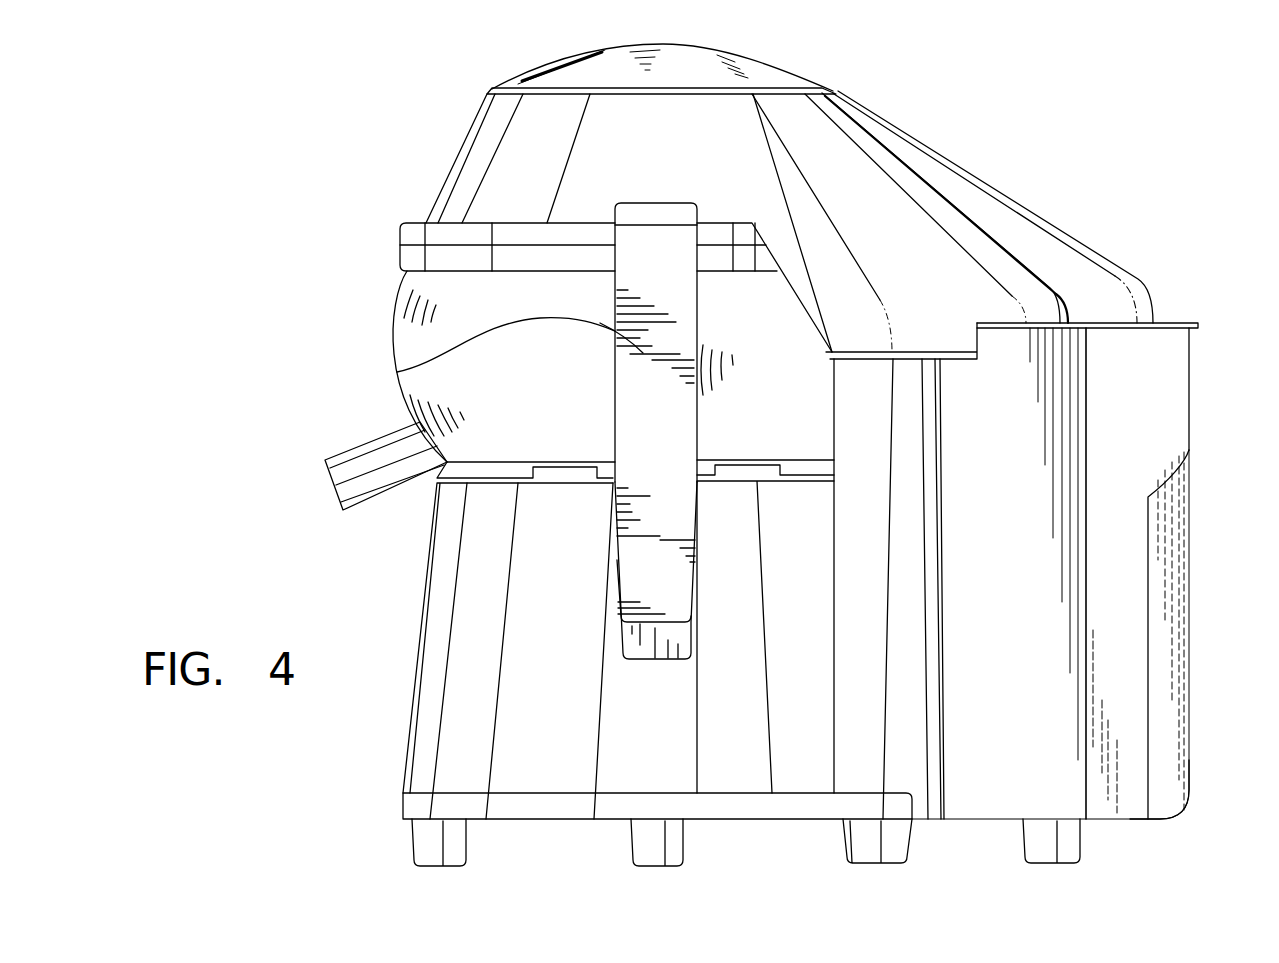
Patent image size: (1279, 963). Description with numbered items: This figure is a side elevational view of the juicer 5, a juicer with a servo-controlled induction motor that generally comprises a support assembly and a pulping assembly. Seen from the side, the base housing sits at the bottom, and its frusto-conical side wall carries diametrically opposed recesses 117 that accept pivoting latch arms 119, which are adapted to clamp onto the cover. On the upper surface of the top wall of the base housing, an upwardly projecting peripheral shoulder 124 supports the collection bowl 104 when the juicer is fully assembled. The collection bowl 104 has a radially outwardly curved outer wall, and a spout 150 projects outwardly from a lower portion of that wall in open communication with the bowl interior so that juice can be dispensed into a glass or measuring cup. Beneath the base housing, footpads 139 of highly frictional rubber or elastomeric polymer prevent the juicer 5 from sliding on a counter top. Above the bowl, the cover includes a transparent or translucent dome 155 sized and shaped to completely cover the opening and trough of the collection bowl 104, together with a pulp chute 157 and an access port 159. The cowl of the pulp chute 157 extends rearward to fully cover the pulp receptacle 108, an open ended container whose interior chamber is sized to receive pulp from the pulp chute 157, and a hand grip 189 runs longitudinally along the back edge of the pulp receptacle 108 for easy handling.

The juicer 5 is at (1123, 192).
The collection bowl 104 is at (394, 325).
The pulp receptacle 108 is at (1174, 593).
The recesses 117 is at (641, 637).
The pivoting latch arms 119 is at (397, 371).
The peripheral shoulder 124 is at (550, 467).
The footpads 139 is at (672, 837).
The spout 150 is at (358, 463).
The dome 155 is at (763, 68).
The pulp chute 157 is at (943, 170).
The access port 159 is at (545, 73).
The hand grip 189 is at (1173, 744).